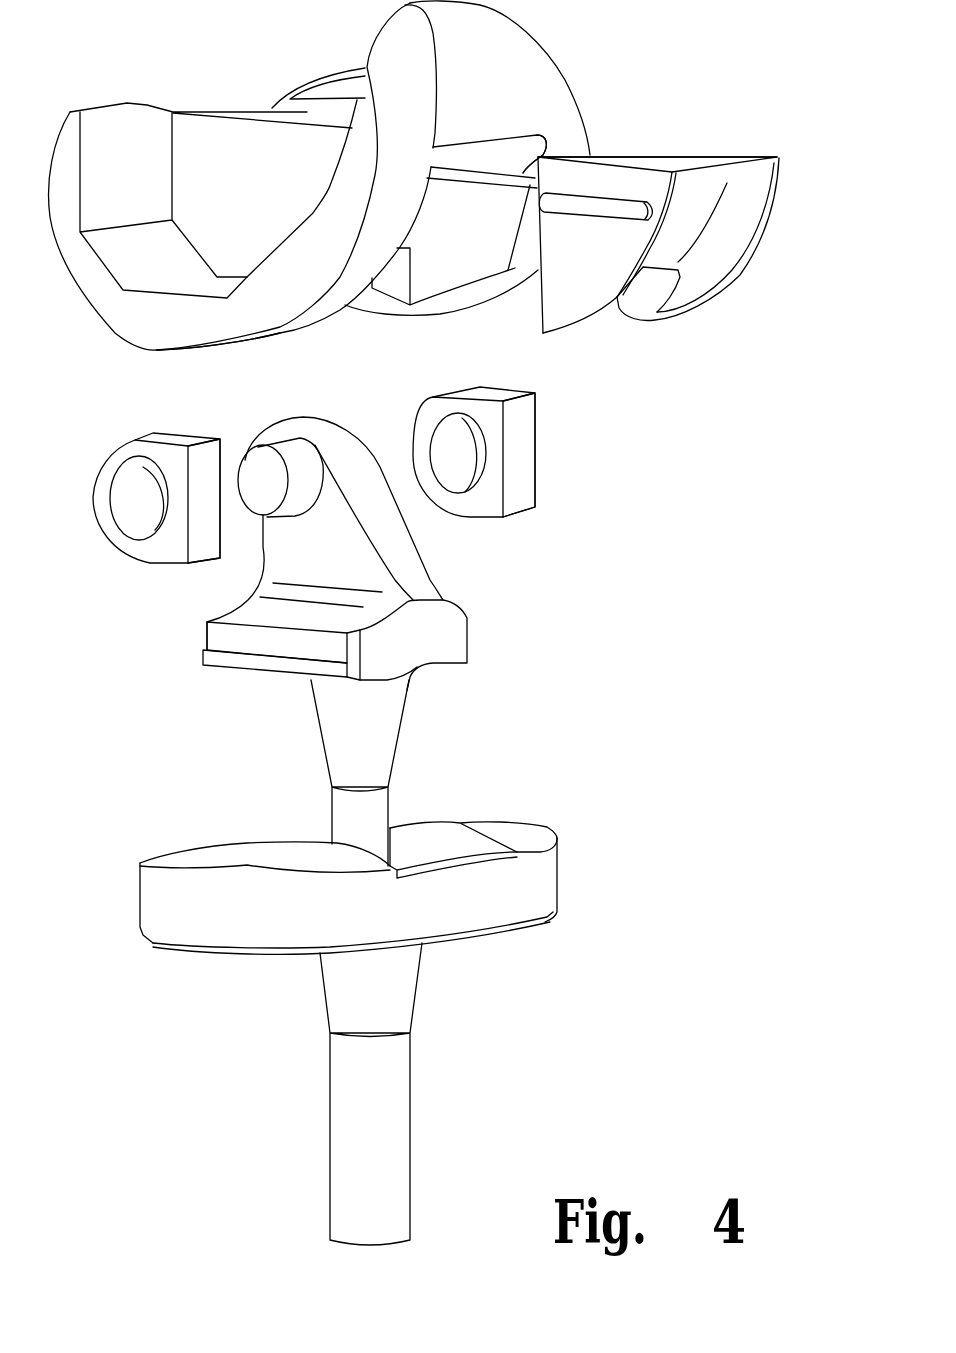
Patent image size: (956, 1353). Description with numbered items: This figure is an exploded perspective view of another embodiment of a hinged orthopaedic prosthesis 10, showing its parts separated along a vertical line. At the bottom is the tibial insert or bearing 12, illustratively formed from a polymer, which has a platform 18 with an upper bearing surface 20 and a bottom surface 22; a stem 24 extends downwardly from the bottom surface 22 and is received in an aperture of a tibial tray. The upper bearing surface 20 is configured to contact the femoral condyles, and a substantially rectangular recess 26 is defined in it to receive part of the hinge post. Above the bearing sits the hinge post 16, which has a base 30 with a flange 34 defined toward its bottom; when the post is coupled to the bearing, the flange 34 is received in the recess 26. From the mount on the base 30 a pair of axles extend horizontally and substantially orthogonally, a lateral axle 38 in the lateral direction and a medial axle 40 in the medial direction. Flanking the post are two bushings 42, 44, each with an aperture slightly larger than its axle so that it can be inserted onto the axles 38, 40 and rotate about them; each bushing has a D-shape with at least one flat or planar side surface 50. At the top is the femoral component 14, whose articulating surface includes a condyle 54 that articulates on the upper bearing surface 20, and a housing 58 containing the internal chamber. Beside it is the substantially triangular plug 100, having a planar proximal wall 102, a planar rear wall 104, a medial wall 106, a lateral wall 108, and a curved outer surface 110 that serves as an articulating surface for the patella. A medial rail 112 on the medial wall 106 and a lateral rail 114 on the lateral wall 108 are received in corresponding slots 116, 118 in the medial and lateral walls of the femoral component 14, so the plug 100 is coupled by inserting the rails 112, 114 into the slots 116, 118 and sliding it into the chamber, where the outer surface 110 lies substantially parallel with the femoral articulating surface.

The hinged orthopaedic prosthesis 10 is at (666, 617).
The tibial insert or bearing 12 is at (550, 860).
The femoral component 14 is at (162, 328).
The hinge post 16 is at (430, 588).
The platform 18 is at (152, 913).
The upper bearing surface 20 is at (243, 850).
The bottom surface 22 is at (480, 940).
The stem 24 is at (393, 1130).
The recess 26 is at (433, 837).
The base 30 is at (460, 637).
The flange 34 is at (232, 643).
The lateral axle 38 is at (250, 465).
The medial axle 40 is at (375, 448).
The bushing 42 is at (160, 553).
The bushing 44 is at (520, 502).
The flat or planar side surface 50 is at (203, 460).
The condyle 54 is at (280, 330).
The housing 58 is at (263, 147).
The plug 100 is at (775, 153).
The planar proximal wall or surface 102 is at (657, 152).
The planar rear wall or surface 104 is at (537, 272).
The medial wall or surface 106 is at (593, 277).
The lateral wall or surface 108 is at (760, 217).
The curved outer surface 110 is at (717, 252).
The medial rail 112 is at (593, 200).
The lateral rail 114 is at (787, 166).
The slot 116 is at (432, 195).
The slot 118 is at (530, 178).